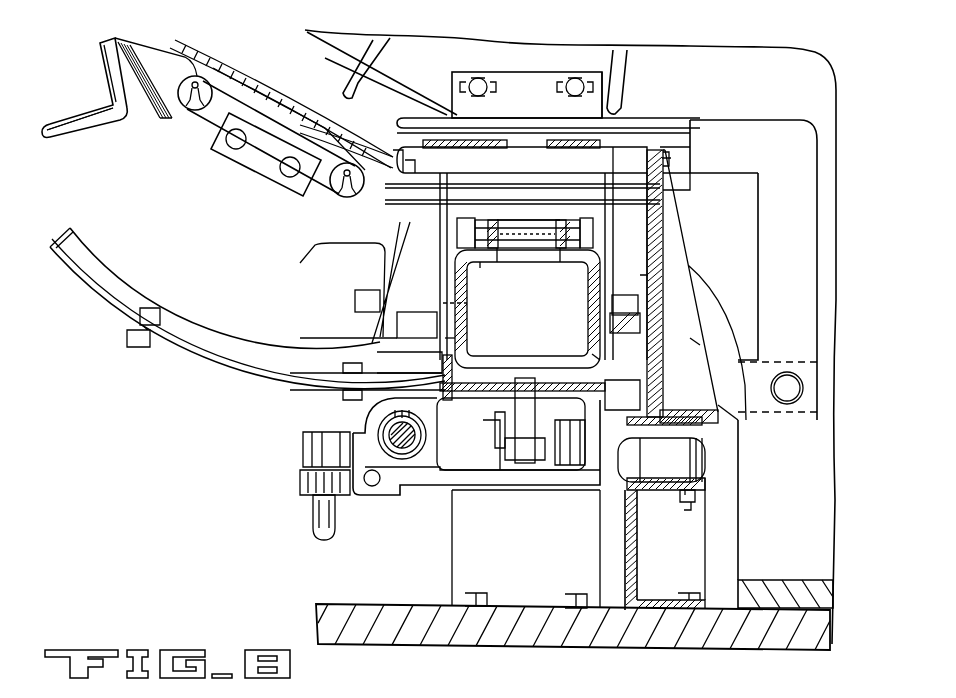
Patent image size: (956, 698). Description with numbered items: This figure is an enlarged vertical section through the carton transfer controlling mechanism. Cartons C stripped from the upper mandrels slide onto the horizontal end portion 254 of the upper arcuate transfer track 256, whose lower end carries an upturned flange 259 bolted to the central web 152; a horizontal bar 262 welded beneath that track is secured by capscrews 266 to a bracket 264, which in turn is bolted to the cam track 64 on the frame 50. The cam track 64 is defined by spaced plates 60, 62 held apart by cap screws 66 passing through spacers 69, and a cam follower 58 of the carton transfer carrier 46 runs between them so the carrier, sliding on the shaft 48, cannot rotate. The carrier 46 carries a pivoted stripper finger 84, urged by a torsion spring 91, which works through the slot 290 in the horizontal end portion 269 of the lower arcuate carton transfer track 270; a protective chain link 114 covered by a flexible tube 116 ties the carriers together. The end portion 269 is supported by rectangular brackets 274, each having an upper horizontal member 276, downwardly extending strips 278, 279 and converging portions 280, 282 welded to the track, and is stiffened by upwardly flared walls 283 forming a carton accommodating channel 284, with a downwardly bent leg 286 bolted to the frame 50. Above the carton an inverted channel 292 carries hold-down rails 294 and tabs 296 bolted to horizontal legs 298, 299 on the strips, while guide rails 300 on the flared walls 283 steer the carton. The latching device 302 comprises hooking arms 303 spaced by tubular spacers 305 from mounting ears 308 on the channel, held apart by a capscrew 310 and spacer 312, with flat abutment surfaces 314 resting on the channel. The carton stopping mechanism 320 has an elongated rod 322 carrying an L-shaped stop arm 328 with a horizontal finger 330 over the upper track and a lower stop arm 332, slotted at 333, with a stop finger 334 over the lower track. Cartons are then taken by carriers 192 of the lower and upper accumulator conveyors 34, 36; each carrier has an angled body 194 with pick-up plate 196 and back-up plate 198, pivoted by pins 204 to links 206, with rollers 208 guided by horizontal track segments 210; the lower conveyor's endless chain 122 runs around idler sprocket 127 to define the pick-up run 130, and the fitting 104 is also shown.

The lower accumulator conveyor 34 is at (232, 163).
The upper accumulator conveyor 36 is at (397, 47).
The carton transfer carrier 46 is at (437, 487).
The shaft 48 is at (400, 443).
The frame 50 is at (345, 603).
The cam follower 58 is at (643, 487).
The plate 60 is at (700, 450).
The plate 62 is at (705, 482).
The cam track 64 is at (667, 487).
The cap screw 66 is at (685, 490).
The spacer 69 is at (705, 460).
The stripper finger 84 is at (527, 460).
The torsion spring 91 is at (510, 450).
The fitting 104 is at (293, 477).
The protective chain link 114 is at (320, 537).
The flexible tube 116 is at (312, 512).
The endless chain 122 is at (215, 120).
The lower idler sprocket 127 is at (274, 63).
The lower horizontal pick-up run 130 is at (505, 187).
The central web 152 is at (785, 514).
The carton carrier 192 is at (87, 138).
The angled body 194 is at (135, 72).
The pick-up plate 196 is at (78, 122).
The back-up plate 198 is at (100, 52).
The pin 204 is at (190, 108).
The link 206 is at (290, 170).
The roller 208 is at (183, 88).
The horizontal track segment 210 is at (577, 195).
The horizontal end portion 254 is at (600, 128).
The upper arcuate transfer track 256 is at (180, 42).
The upturned flange 259 is at (596, 78).
The horizontal bar 262 is at (400, 150).
The bracket 264 is at (663, 182).
The capscrew 266 is at (666, 160).
The horizontal end portion 269 is at (495, 387).
The lower arcuate carton transfer track 270 is at (217, 362).
The rectangular bracket 274 is at (437, 238).
The upper horizontal member 276 is at (417, 173).
The strip 278 is at (410, 325).
The strip 279 is at (692, 268).
The downwardly converging portion 280 is at (455, 338).
The downwardly converging portion 282 is at (592, 354).
The upwardly flared wall 283 is at (465, 372).
The carton accommodating channel 284 is at (470, 395).
The downwardly bent leg 286 is at (526, 549).
The slot 290 is at (578, 398).
The inverted channel 292 is at (577, 312).
The hold-down rail 294 is at (480, 265).
The tab 296 is at (400, 307).
The horizontal leg 298 is at (417, 332).
The horizontal leg 299 is at (690, 342).
The carton guide rail 300 is at (460, 353).
The latching device 302 is at (577, 205).
The hooking arm 303 is at (493, 210).
The tubular spacer 305 is at (535, 220).
The mounting ear 308 is at (475, 210).
The capscrew 310 is at (630, 250).
The spacer 312 is at (515, 255).
The flat abutment surface 314 is at (548, 265).
The carton stopping mechanism 320 is at (693, 112).
The elongated rod 322 is at (790, 396).
The stop arm 328 is at (777, 292).
The horizontal finger 330 is at (547, 123).
The lower stop arm 332 is at (728, 400).
The slot 333 is at (625, 393).
The stop finger 334 is at (372, 398).
The carton C is at (443, 303).